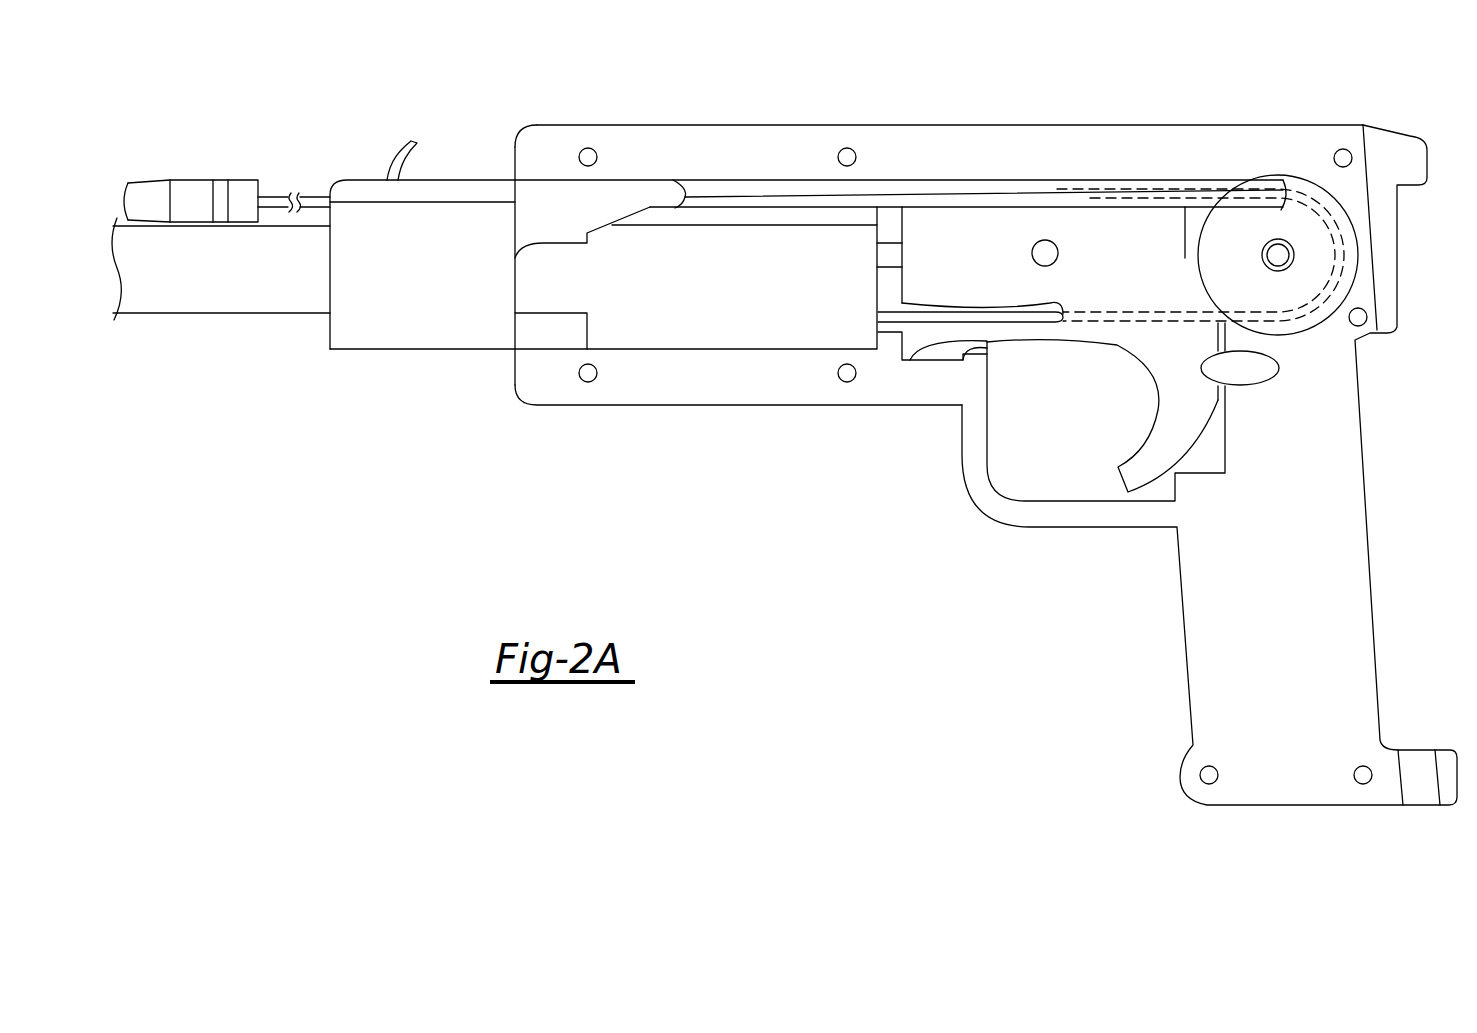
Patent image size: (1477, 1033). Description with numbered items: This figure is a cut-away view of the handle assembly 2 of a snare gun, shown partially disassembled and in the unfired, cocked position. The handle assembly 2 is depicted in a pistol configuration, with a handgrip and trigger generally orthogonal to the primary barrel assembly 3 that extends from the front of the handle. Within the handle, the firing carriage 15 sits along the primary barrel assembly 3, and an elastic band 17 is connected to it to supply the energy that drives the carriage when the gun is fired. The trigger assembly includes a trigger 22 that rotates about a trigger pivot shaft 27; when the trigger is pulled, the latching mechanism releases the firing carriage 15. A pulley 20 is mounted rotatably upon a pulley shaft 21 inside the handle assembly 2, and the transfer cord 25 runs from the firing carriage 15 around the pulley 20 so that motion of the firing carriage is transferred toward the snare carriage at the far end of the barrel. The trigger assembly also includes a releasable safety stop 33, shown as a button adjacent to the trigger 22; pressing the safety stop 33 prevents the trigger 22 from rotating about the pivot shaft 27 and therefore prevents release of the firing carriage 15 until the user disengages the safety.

The handle assembly 2 is at (1357, 572).
The primary barrel assembly 3 is at (201, 295).
The firing carriage 15 is at (418, 333).
The elastic band 17 is at (317, 200).
The pulley 20 is at (1282, 210).
The pulley shaft 21 is at (1278, 255).
The trigger 22 is at (1145, 228).
The transfer cord 25 is at (933, 205).
The trigger pivot shaft 27 is at (1050, 240).
The safety stop 33 is at (1268, 368).